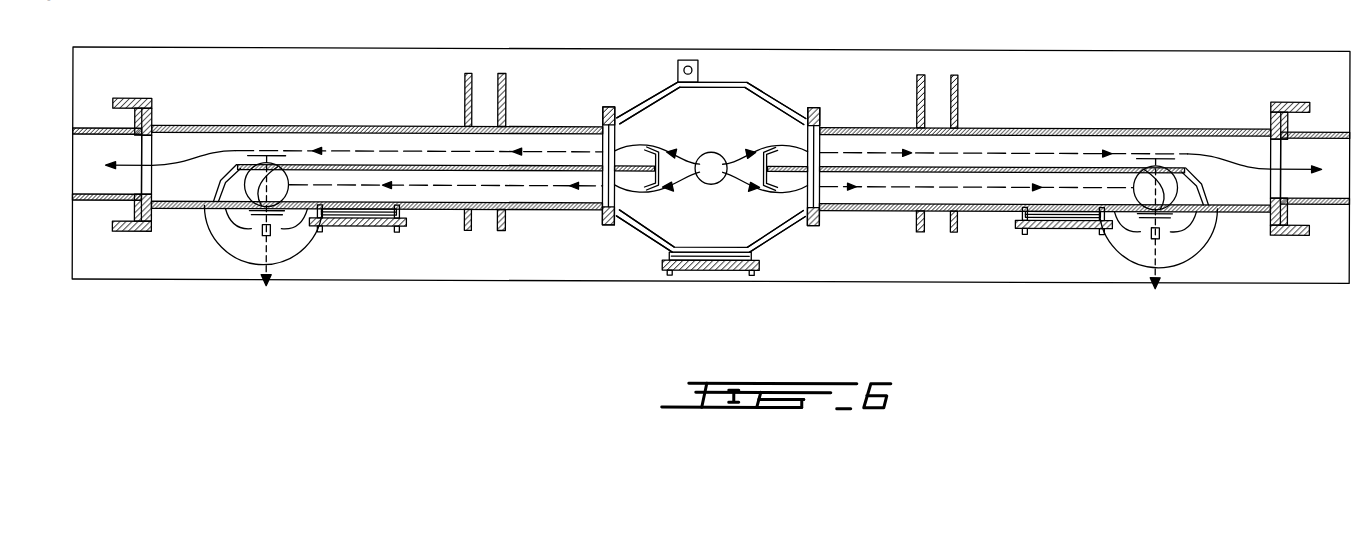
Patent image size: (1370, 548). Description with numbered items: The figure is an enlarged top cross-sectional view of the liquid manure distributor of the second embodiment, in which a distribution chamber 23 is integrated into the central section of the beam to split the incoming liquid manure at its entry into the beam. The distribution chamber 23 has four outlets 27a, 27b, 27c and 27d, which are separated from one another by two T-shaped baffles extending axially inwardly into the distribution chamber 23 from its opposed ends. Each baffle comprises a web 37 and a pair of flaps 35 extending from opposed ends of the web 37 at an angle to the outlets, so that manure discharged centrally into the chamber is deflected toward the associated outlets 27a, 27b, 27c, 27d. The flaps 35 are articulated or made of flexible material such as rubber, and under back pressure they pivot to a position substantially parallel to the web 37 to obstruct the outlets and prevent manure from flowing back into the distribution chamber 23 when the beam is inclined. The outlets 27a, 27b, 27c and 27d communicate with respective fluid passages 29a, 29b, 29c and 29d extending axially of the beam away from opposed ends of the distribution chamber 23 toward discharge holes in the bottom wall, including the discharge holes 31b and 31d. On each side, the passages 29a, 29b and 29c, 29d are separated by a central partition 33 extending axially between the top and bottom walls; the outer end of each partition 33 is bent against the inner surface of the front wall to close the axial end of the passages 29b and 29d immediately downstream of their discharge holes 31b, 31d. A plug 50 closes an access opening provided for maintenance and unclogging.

The distribution chamber 23 is at (720, 198).
The outlet 27a is at (628, 134).
The outlet 27b is at (628, 222).
The outlet 27c is at (812, 135).
The outlet 27d is at (810, 222).
The fluid passage 29a is at (406, 147).
The fluid passage 29b is at (418, 181).
The fluid passage 29c is at (985, 147).
The fluid passage 29d is at (963, 183).
The discharge hole 31b is at (282, 196).
The discharge hole 31d is at (1172, 189).
The central partition 33 is at (332, 163).
The flap 35 is at (653, 143).
The web 37 is at (702, 156).
The plug 50 is at (713, 276).